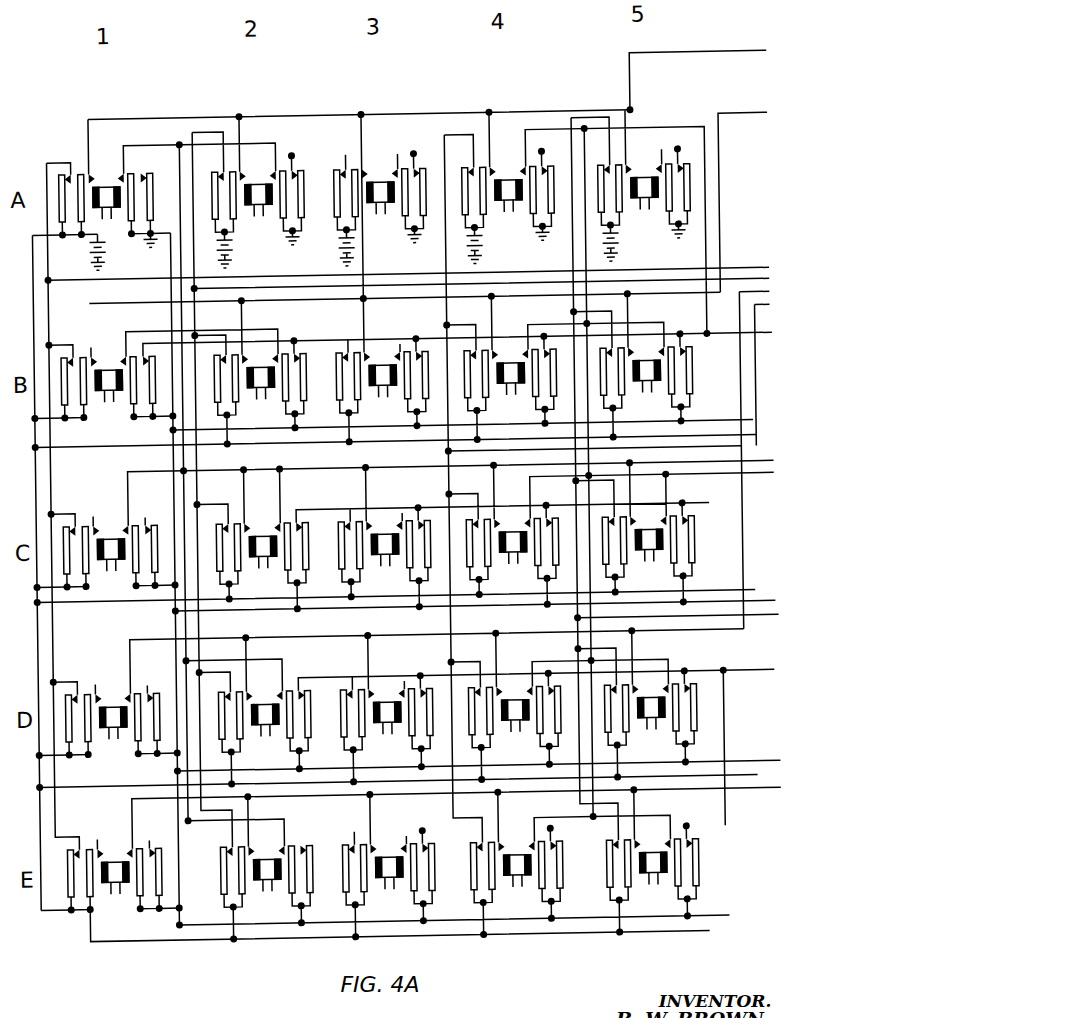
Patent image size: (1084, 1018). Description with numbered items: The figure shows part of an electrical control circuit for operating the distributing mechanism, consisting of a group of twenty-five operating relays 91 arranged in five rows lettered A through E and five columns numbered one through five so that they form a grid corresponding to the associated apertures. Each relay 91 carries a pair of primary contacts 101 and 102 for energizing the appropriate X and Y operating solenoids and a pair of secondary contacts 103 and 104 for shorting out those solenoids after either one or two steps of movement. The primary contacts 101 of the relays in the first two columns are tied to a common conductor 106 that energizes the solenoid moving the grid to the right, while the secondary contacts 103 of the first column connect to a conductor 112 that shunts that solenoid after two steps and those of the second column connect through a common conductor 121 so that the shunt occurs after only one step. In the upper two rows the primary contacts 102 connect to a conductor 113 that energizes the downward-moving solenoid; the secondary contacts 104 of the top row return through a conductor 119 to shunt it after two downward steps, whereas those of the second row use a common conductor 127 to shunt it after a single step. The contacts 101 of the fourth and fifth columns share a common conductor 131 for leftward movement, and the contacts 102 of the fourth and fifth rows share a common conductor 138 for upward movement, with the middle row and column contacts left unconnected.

The operating relay 91 is at (105, 222).
The primary contact 101 is at (89, 172).
The primary contact 102 is at (124, 172).
The secondary contact 103 is at (71, 172).
The secondary contact 104 is at (71, 172).
The common conductor 106 is at (340, 473).
The conductor 112 is at (735, 280).
The conductor 113 is at (720, 345).
The conductor 119 is at (700, 63).
The common conductor 121 is at (295, 304).
The common conductor 127 is at (745, 125).
The common conductor 131 is at (685, 485).
The common conductor 138 is at (727, 682).